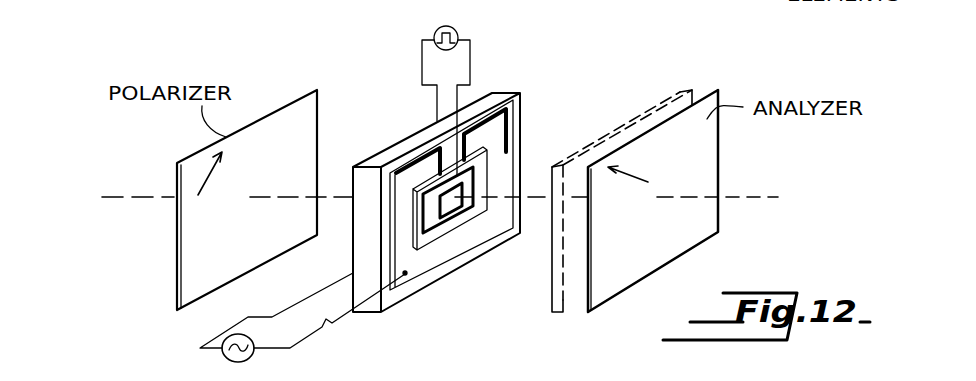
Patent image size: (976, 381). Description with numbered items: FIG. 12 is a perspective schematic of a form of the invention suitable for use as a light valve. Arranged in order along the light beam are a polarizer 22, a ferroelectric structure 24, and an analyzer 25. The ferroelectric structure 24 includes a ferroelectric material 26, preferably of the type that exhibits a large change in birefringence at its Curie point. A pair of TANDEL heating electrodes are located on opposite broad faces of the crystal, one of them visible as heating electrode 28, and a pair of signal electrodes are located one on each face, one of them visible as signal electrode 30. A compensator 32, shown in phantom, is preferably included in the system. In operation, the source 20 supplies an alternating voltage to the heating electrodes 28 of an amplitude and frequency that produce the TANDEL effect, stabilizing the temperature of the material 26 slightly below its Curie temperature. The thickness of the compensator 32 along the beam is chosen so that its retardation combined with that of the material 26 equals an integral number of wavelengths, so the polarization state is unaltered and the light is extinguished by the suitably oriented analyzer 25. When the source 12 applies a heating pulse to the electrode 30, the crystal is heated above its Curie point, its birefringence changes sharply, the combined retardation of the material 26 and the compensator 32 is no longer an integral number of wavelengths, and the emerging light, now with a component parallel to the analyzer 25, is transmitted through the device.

The source 12 is at (459, 29).
The source of an alternating voltage 20 is at (238, 362).
The polarizer 22 is at (319, 106).
The ferroelectric structure 24 is at (543, 52).
The analyzer 25 is at (718, 155).
The ferroelectric material 26 is at (508, 90).
The TANDEL heating electrode 28 is at (447, 247).
The signal electrode 30 is at (476, 178).
The compensator 32 is at (573, 297).